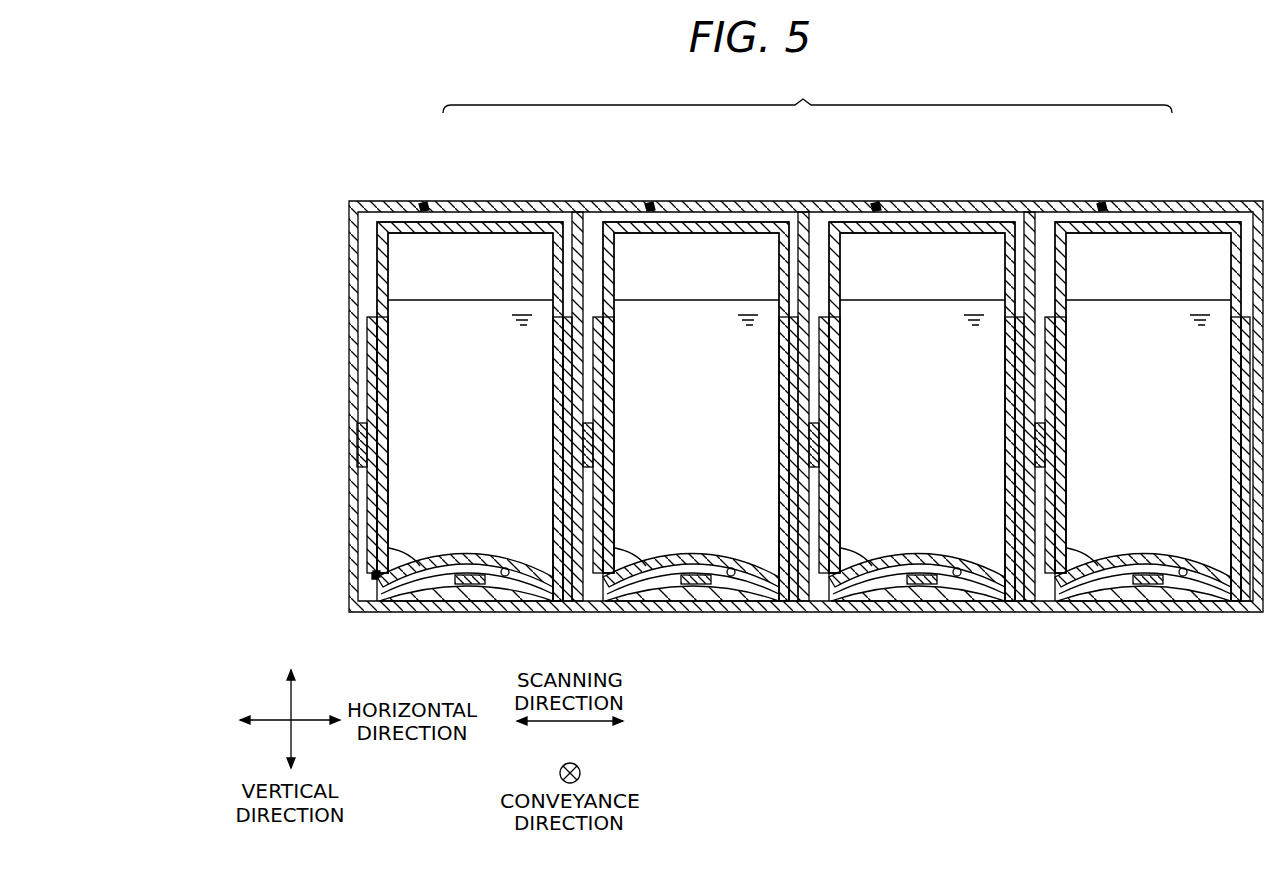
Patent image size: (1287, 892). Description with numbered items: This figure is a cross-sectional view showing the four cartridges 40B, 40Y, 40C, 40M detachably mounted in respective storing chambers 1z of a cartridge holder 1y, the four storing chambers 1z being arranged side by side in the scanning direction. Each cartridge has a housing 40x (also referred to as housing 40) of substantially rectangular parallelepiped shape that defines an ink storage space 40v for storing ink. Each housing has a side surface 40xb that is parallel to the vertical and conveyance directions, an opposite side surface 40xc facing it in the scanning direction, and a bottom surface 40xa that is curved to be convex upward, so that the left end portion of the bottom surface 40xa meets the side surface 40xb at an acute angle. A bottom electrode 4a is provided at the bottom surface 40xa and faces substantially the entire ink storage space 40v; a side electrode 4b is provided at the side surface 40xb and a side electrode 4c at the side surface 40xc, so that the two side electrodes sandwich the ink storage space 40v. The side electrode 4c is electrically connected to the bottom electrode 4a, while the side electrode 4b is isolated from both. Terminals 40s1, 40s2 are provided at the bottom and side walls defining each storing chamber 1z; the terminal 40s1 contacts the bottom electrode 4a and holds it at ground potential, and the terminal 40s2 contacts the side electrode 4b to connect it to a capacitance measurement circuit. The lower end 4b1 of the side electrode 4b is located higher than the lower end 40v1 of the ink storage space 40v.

The housing 40 is at (807, 95).
The cartridge 40B is at (459, 224).
The cartridge 40Y is at (685, 224).
The cartridge 40C is at (910, 224).
The cartridge 40M is at (1137, 224).
The cartridge holder 1y is at (352, 273).
The storing chamber 1z is at (424, 205).
The housing 40x is at (522, 224).
The ink storage space 40v is at (492, 283).
The bottom surface 40xa is at (510, 566).
The side surface 40xb is at (374, 399).
The side surface 40xc is at (566, 346).
The bottom electrode 4a is at (470, 575).
The side electrode 4b is at (378, 478).
The lower end 4b1 is at (372, 574).
The side electrode 4c is at (556, 402).
The terminal 40s1 is at (474, 586).
The terminal 40s2 is at (360, 441).
The lower end 40v1 is at (372, 576).